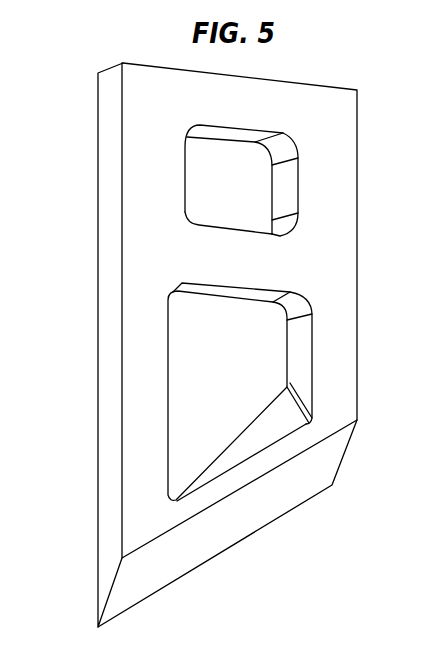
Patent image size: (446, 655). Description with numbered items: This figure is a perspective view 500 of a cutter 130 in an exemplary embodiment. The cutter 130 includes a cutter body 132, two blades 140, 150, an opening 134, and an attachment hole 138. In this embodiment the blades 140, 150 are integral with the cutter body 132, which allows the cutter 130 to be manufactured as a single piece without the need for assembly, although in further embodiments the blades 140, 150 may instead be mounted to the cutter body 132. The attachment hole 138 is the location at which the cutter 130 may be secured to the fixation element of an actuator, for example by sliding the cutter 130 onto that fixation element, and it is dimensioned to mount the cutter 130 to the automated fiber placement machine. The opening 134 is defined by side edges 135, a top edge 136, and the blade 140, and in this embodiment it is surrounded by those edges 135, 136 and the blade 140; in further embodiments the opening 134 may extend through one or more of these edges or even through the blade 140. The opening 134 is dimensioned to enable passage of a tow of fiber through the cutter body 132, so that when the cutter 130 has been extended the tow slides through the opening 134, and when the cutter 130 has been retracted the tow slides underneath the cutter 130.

The cutter 130 is at (66, 128).
The cutter body 132 is at (108, 246).
The opening 134 is at (296, 380).
The side edges 135 is at (288, 355).
The top edge 136 is at (232, 288).
The attachment hole 138 is at (276, 195).
The blade 140 is at (190, 465).
The blade 150 is at (226, 524).
The perspective view 500 is at (338, 557).